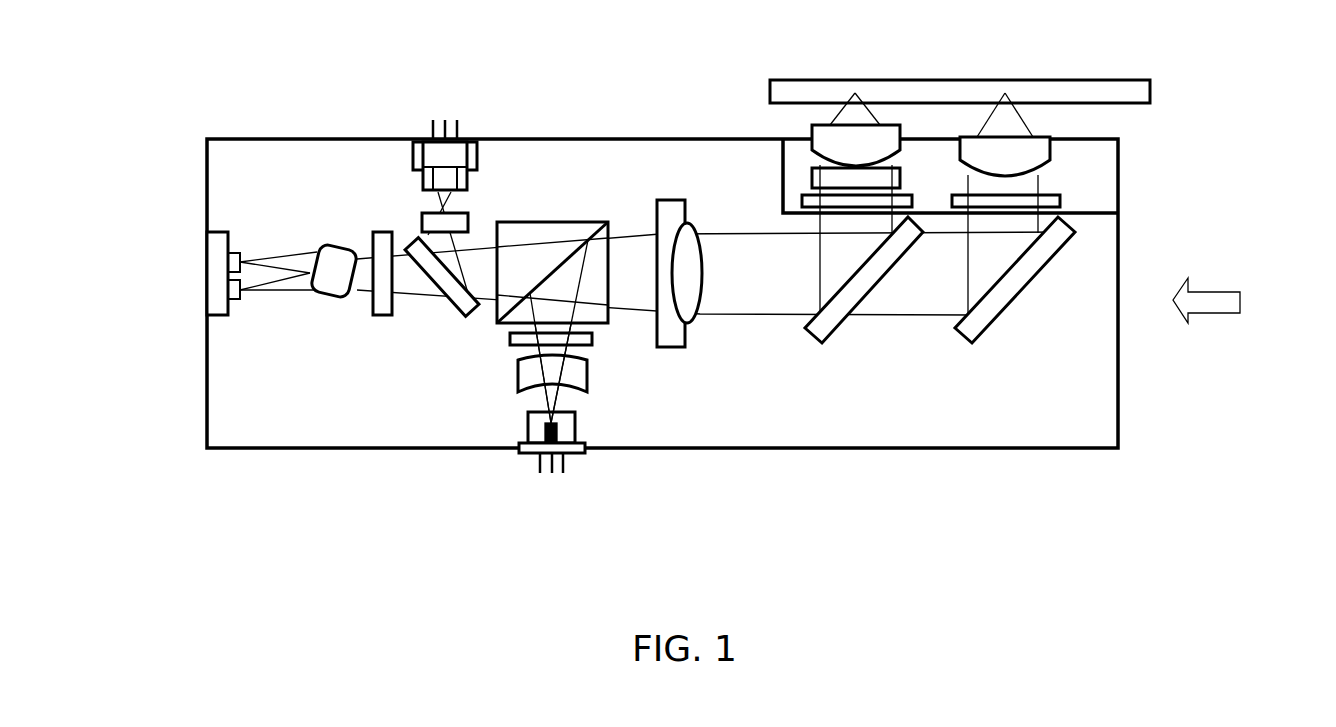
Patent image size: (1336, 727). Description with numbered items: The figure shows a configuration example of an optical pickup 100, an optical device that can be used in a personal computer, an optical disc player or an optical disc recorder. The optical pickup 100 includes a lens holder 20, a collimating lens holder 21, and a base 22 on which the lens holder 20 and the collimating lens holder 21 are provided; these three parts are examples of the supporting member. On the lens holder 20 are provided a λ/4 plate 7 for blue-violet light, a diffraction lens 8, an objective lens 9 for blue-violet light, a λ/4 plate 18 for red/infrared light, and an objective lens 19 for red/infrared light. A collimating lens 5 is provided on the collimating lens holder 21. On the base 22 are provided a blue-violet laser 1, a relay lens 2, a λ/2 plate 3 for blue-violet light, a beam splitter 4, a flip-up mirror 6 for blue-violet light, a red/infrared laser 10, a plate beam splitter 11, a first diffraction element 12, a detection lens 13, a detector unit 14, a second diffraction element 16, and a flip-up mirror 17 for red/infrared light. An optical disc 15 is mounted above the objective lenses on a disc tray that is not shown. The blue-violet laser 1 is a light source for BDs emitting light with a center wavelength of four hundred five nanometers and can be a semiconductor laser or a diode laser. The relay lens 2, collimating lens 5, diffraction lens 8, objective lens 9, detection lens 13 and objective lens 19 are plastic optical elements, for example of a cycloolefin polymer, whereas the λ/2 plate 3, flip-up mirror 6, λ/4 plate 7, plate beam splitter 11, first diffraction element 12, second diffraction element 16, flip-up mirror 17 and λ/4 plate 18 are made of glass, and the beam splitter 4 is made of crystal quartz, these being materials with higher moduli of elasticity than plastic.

The blue-violet laser 1 is at (567, 427).
The relay lens 2 is at (577, 375).
The λ/2 plate for blue-violet light 3 is at (515, 347).
The beam splitter 4 is at (515, 238).
The collimating lens 5 is at (690, 298).
The flip-up mirror for blue-violet light 6 is at (853, 298).
The λ/4 plate for blue-violet light 7 is at (807, 200).
The diffraction lens 8 is at (813, 177).
The objective lens for blue-violet light 9 is at (822, 137).
The red/infrared laser 10 is at (453, 157).
The plate beam splitter 11 is at (419, 250).
The first diffraction element 12 is at (382, 247).
The detection lens 13 is at (317, 293).
The detector unit 14 is at (217, 302).
The optical disc 15 is at (803, 95).
The second diffraction element 16 is at (469, 217).
The flip-up mirror for red/infrared light 17 is at (1020, 280).
The λ/4 plate for red/infrared light 18 is at (1060, 193).
The objective lens for red/infrared light 19 is at (1030, 152).
The lens holder 20 is at (1105, 198).
The collimating lens holder 21 is at (683, 330).
The base 22 is at (1068, 417).
The optical pickup 100 is at (1243, 300).